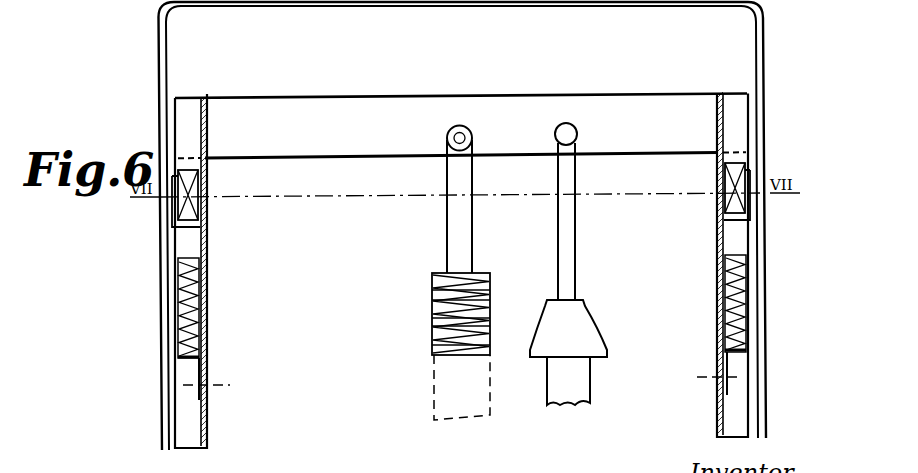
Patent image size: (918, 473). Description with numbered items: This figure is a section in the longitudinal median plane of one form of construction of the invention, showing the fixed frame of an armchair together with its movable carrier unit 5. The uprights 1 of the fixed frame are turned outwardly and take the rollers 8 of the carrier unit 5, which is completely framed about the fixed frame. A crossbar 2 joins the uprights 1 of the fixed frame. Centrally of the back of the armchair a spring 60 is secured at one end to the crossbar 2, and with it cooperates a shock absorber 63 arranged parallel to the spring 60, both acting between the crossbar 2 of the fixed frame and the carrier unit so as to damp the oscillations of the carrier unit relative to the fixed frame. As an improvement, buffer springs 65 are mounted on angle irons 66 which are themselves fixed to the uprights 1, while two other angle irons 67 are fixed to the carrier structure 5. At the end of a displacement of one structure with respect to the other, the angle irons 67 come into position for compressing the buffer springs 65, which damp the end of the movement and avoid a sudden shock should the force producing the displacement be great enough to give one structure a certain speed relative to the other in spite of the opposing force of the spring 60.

The uprights 1 is at (205, 428).
The crossbar 2 is at (366, 147).
The carrier unit 5 is at (162, 83).
The rollers 8 is at (196, 210).
The spring 60 is at (485, 328).
The shock absorber 63 is at (596, 337).
The buffer springs 65 is at (200, 326).
The angle irons 66 is at (193, 377).
The angle irons 67 is at (203, 228).